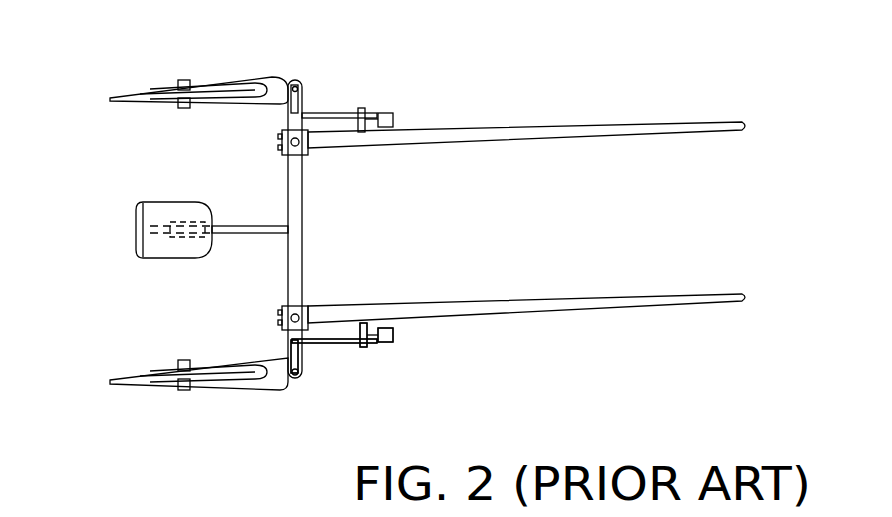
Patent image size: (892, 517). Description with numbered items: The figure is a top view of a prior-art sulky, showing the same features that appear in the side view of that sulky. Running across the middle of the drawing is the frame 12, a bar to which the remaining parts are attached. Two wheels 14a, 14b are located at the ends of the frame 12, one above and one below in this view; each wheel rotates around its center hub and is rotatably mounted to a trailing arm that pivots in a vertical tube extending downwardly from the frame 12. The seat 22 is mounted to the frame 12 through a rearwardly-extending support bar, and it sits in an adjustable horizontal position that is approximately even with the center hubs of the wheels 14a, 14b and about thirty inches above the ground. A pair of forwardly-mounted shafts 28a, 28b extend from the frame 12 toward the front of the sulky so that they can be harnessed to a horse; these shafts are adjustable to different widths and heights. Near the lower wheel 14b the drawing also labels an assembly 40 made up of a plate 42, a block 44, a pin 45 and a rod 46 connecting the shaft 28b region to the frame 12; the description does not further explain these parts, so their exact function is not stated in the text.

The frame 12 is at (303, 196).
The wheel 14a is at (130, 93).
The wheel 14b is at (128, 386).
The seat 22 is at (169, 202).
The forwardly-mounted shaft 28a is at (523, 140).
The forwardly-mounted shaft 28b is at (568, 297).
The linkage assembly 40 is at (262, 325).
The mounting plate 42 is at (288, 352).
The connector block 44 is at (394, 335).
The cross pin 45 is at (365, 348).
The link rod 46 is at (327, 344).